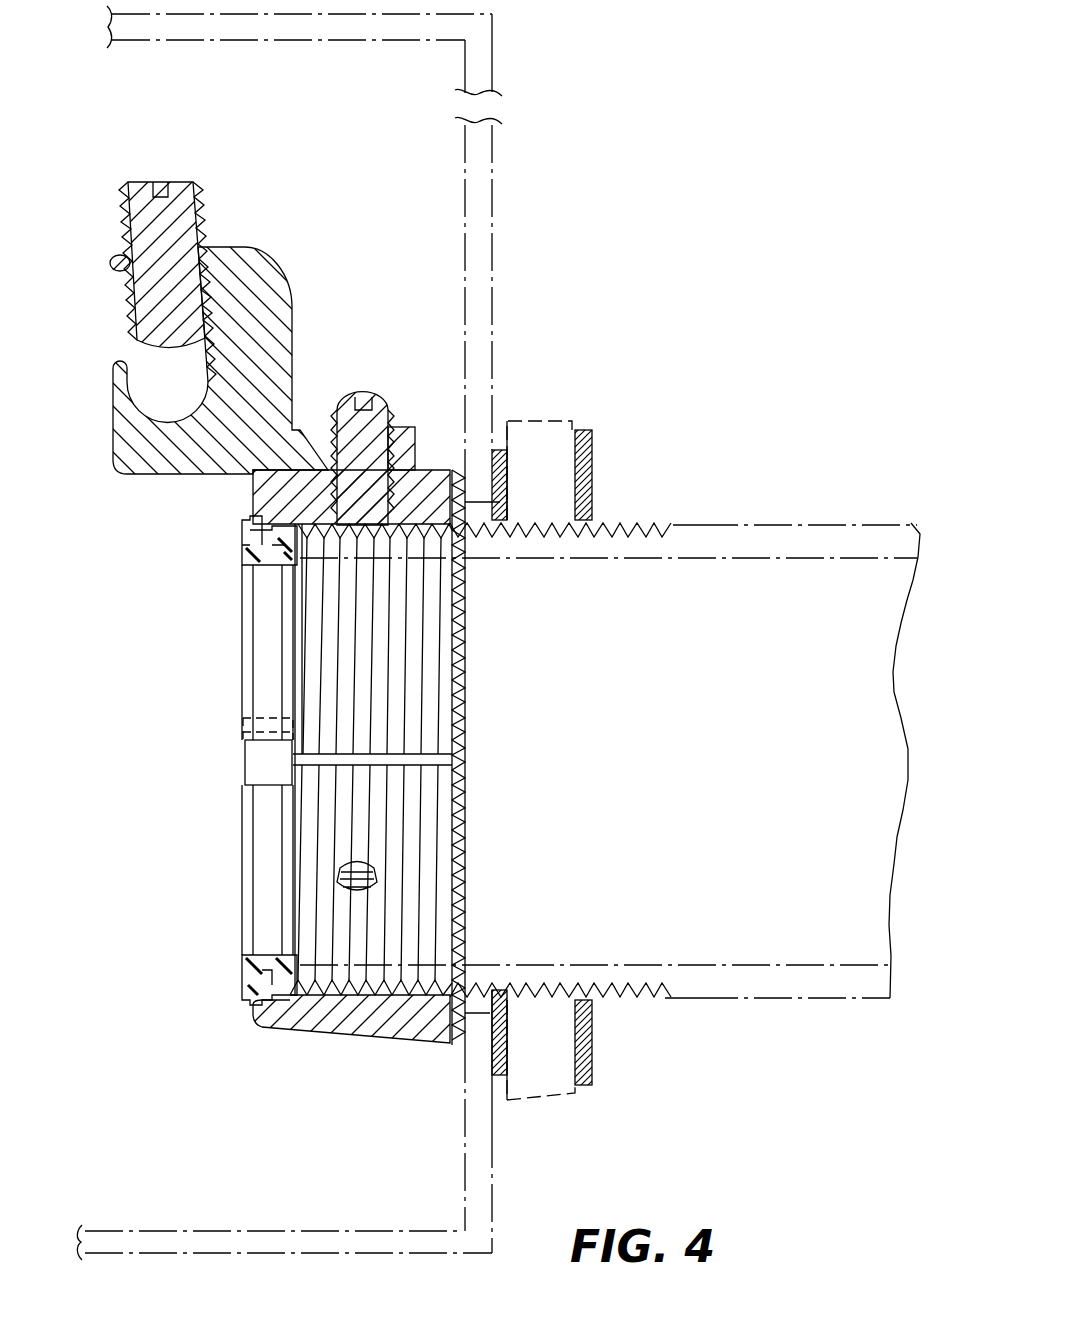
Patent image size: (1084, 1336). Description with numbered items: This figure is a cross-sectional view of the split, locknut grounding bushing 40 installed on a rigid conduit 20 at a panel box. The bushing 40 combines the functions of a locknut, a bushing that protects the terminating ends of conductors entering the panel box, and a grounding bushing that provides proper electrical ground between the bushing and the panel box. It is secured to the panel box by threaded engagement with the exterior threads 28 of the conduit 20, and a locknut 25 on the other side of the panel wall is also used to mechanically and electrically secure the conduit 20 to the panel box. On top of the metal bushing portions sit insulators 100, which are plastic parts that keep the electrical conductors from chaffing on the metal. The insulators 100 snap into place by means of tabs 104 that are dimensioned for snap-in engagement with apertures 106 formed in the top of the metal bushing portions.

The conduit 20 is at (800, 523).
The locknut 25 is at (540, 420).
The threads 28 is at (648, 523).
The split, locknut grounding bushing 40 is at (352, 372).
The insulators 100 is at (262, 663).
The tabs 104 is at (242, 520).
The apertures 106 is at (277, 1018).